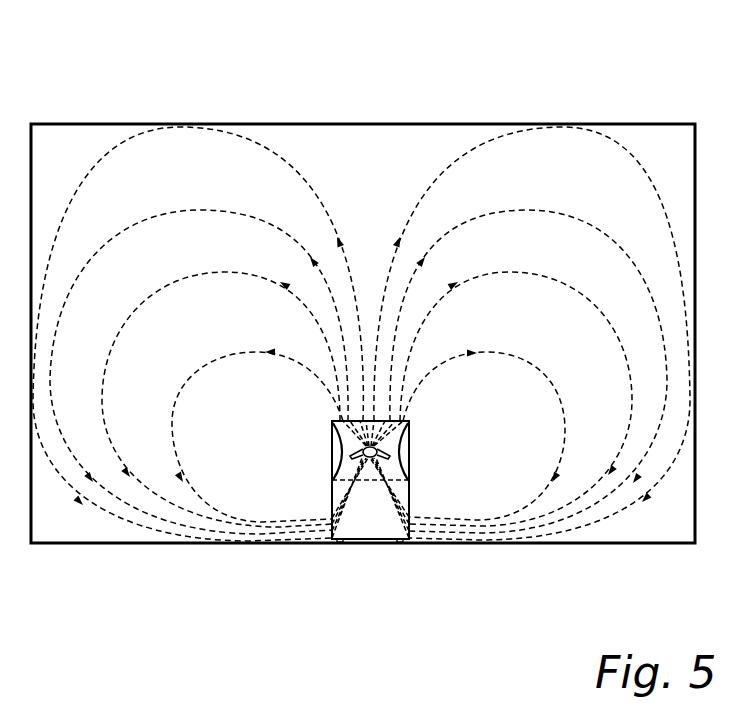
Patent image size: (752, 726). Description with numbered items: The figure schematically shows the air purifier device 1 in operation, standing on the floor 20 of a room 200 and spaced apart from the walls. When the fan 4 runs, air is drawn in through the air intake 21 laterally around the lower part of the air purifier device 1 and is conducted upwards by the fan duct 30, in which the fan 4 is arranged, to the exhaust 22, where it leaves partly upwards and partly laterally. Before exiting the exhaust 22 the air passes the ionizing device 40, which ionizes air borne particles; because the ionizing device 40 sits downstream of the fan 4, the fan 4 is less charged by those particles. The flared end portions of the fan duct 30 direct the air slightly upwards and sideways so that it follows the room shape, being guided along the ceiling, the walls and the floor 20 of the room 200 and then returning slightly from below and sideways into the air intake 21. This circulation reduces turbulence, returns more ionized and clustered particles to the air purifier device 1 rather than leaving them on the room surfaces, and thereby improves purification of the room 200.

The room 200 is at (632, 123).
The floor 20 is at (533, 542).
The air purifier device 1 is at (384, 468).
The air intake 21 is at (410, 524).
The exhaust 22 is at (341, 432).
The ionizing device 40 is at (335, 430).
The fan 4 is at (408, 424).
The fan duct 30 is at (387, 440).